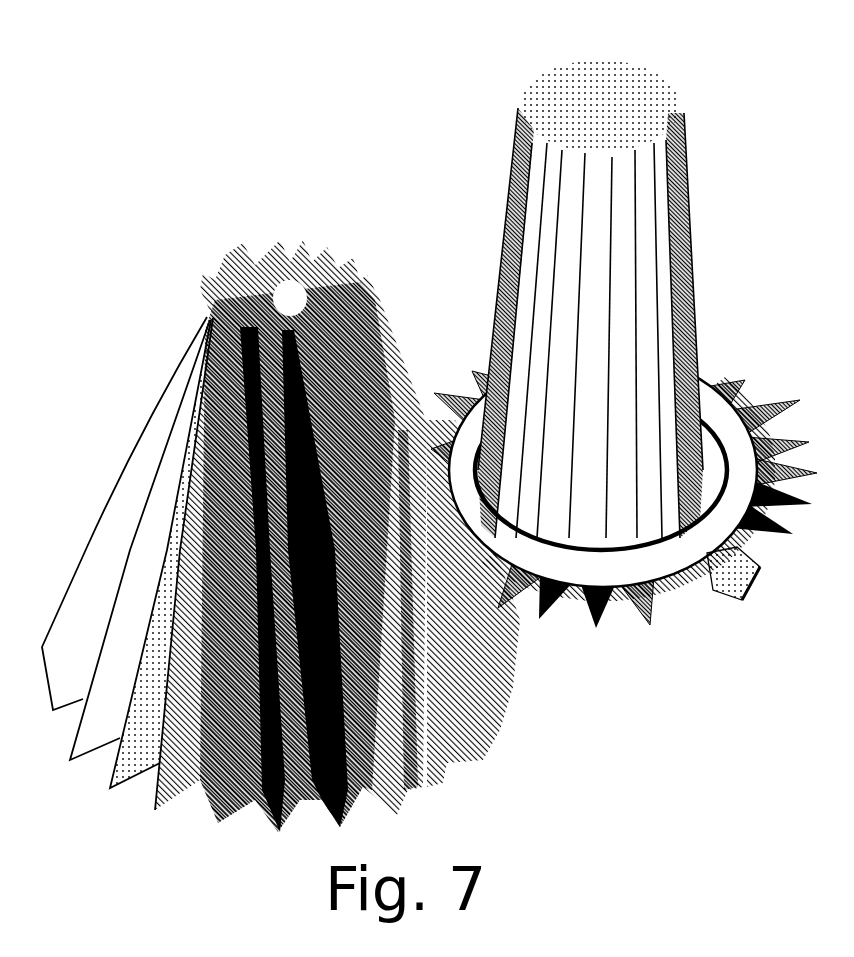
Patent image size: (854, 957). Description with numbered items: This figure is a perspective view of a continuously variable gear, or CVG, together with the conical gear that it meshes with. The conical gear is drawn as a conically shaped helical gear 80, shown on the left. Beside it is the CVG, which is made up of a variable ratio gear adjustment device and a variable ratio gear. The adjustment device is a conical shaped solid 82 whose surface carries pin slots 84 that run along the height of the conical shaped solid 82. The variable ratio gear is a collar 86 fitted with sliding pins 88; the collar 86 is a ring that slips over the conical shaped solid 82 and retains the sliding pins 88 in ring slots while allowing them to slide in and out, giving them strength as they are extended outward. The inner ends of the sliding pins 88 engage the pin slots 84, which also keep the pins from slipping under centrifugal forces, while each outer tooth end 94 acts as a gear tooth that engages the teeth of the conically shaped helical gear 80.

The conically shaped helical gear 80 is at (213, 830).
The conical shaped solid 82 is at (678, 100).
The pin slots 84 is at (678, 249).
The collar 86 is at (723, 443).
The sliding pins 88 is at (597, 630).
The tooth end 94 is at (760, 572).